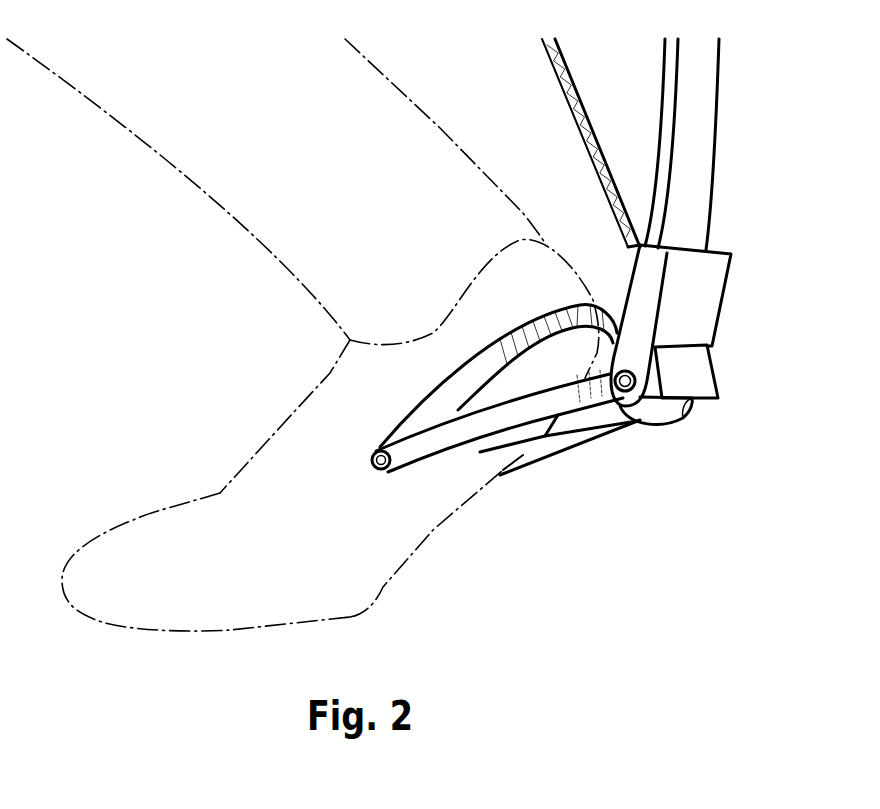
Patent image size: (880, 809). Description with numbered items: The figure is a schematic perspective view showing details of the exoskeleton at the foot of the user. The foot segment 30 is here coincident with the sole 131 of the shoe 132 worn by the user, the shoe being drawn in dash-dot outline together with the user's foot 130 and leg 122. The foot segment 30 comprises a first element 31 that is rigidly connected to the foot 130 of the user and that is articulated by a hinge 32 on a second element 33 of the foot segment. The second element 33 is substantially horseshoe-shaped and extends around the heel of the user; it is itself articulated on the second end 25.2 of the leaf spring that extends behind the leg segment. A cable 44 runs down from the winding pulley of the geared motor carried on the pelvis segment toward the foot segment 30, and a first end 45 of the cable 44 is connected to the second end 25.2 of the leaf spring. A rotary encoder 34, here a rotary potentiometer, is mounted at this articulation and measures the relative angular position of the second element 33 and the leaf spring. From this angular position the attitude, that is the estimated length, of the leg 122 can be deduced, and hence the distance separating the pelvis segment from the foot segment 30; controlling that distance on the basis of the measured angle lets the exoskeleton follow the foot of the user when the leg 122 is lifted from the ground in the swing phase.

The leg 122 is at (122, 98).
The foot 130 is at (305, 430).
The sole 131 is at (460, 527).
The shoe 132 is at (105, 512).
The foot segment 30 is at (507, 495).
The first element of foot segment 31 is at (500, 350).
The hinge 32 is at (377, 458).
The second element of foot segment 33 is at (590, 425).
The rotary encoder 34 is at (708, 383).
The cable 44 is at (550, 57).
The first end of the cable 45 is at (610, 207).
The second end of the leaf spring 25.2 is at (717, 247).